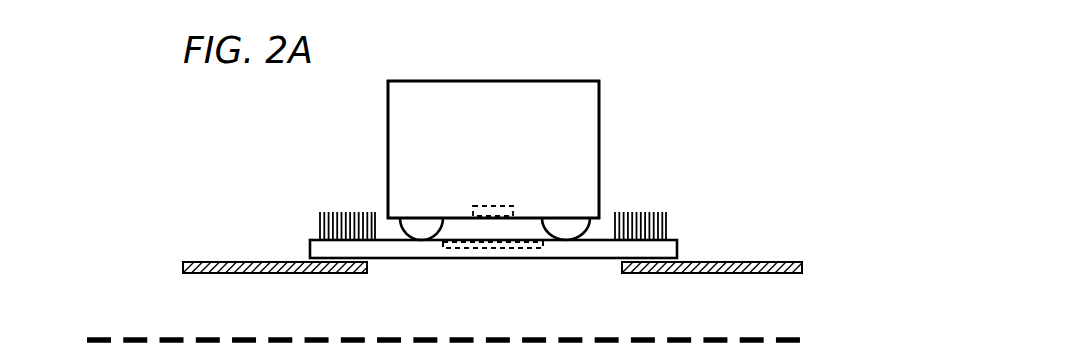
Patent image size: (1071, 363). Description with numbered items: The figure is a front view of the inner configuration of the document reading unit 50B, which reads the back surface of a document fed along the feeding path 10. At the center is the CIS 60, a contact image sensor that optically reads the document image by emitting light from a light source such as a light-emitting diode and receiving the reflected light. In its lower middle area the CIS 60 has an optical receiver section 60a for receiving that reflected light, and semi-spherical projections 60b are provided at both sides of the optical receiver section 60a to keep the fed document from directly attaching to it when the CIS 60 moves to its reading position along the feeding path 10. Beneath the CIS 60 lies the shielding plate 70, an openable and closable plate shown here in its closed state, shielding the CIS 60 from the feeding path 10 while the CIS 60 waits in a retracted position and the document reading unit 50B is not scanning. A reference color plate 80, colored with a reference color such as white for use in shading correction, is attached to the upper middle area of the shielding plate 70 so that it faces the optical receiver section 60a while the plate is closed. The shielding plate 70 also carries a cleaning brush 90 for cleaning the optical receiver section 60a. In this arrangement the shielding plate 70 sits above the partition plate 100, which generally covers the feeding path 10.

The document reading unit 50B is at (715, 83).
The CIS 60 is at (599, 106).
The optical receiver section 60a is at (498, 206).
The semi-spherical projections 60b is at (425, 232).
The shielding plate 70 is at (677, 240).
The reference color plate 80 is at (493, 250).
The cleaning brush 90 is at (320, 220).
The partition plate 100 is at (362, 274).
The feeding path 10 is at (166, 338).